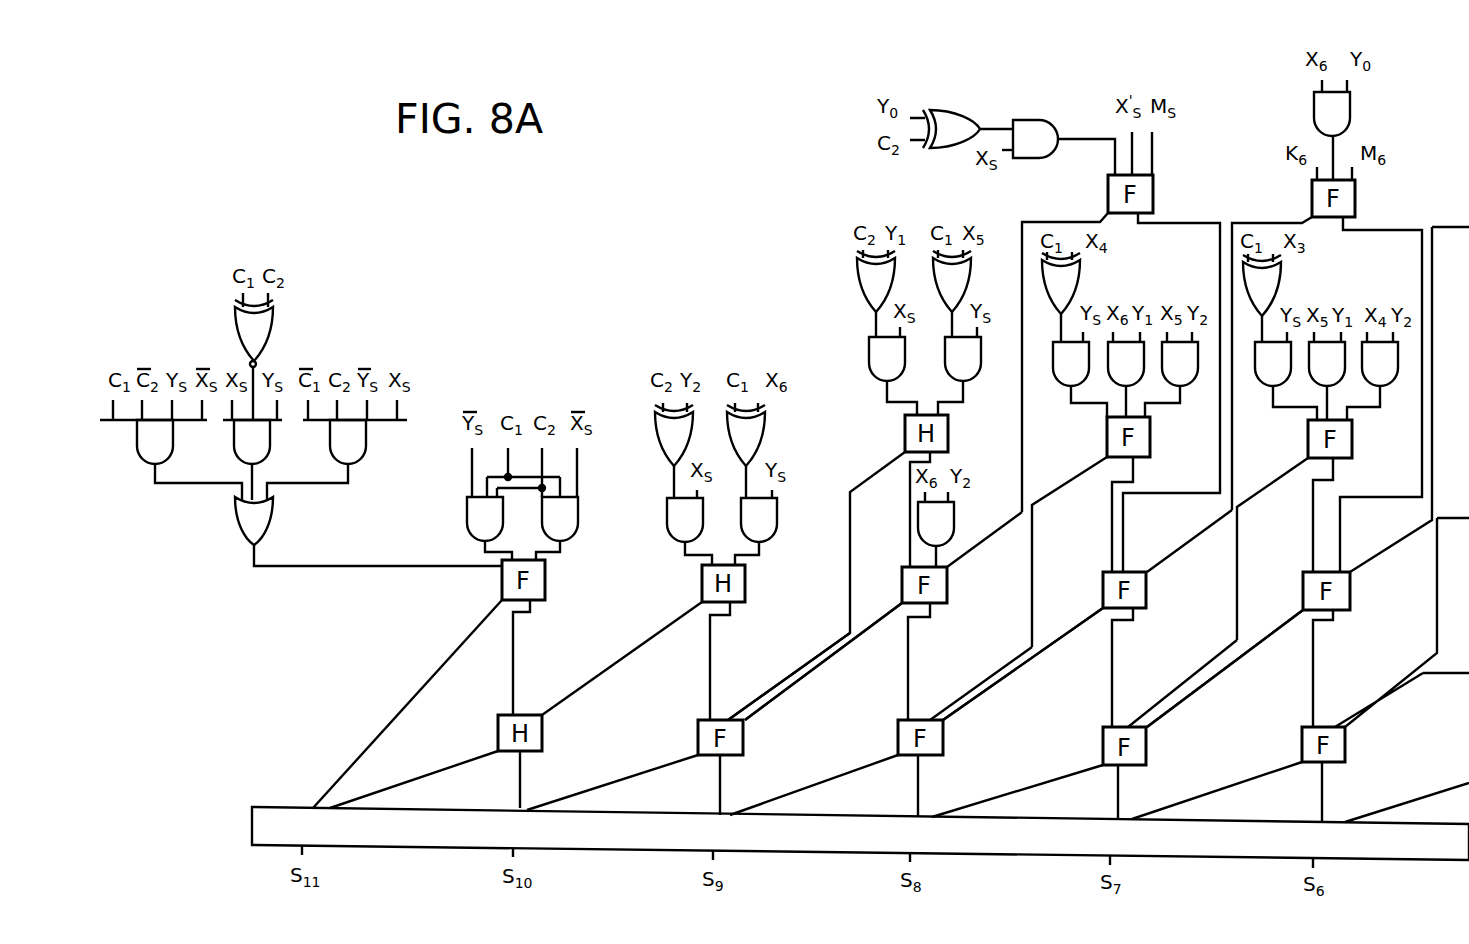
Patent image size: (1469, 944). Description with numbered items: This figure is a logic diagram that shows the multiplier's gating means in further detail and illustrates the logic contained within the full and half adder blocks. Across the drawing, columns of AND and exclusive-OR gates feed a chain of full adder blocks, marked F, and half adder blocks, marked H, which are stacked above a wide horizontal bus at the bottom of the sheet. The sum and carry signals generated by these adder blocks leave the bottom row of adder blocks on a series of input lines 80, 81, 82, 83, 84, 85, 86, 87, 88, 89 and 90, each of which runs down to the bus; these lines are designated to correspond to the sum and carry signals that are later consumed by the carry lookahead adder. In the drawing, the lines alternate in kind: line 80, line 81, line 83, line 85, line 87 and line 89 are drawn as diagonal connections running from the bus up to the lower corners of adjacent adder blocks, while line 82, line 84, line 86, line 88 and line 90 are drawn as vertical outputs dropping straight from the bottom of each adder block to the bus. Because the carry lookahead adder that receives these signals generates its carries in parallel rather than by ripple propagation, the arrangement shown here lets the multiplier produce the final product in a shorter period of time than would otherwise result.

The input line 80 is at (353, 765).
The input line 81 is at (463, 763).
The input line 82 is at (520, 771).
The input line 83 is at (650, 769).
The input line 84 is at (720, 773).
The input line 85 is at (852, 770).
The input line 86 is at (918, 777).
The input line 87 is at (1058, 768).
The input line 88 is at (1118, 778).
The input line 89 is at (1257, 776).
The input line 90 is at (1322, 780).